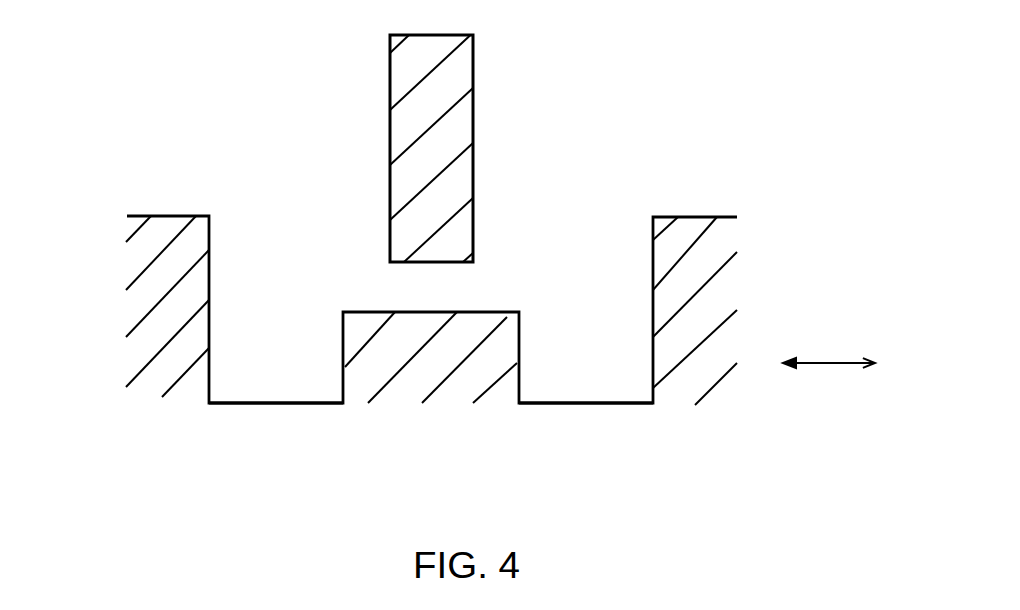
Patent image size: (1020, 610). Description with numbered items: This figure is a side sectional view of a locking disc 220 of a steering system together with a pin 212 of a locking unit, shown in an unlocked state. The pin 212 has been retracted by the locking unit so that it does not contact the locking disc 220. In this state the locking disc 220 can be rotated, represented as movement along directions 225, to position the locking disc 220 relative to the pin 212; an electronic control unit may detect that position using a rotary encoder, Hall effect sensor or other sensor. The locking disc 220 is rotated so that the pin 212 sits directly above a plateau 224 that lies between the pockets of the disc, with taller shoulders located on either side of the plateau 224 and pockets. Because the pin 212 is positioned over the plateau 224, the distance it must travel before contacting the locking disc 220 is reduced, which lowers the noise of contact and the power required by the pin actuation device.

The pin 212 is at (422, 152).
The locking disc 220 is at (405, 315).
The plateau 224 is at (473, 312).
The directions 225 is at (829, 338).